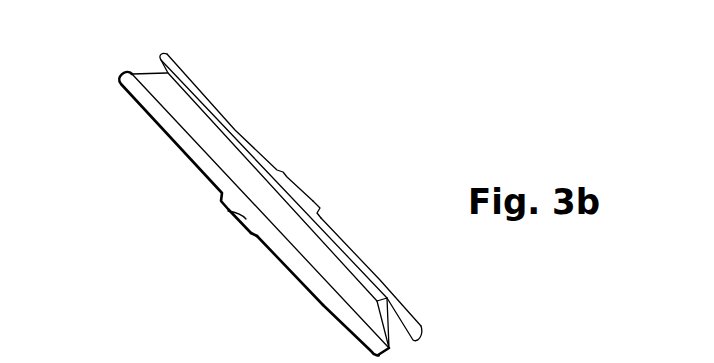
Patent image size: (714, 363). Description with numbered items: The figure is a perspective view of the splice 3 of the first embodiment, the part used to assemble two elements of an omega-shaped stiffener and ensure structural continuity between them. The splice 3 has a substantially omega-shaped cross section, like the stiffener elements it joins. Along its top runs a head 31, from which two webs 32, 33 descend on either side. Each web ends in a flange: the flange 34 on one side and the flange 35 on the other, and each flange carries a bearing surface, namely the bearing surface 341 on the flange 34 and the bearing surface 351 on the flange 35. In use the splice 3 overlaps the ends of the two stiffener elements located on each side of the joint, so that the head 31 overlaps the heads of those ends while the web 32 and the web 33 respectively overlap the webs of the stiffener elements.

The splice 3 is at (143, 162).
The head 31 is at (228, 135).
The web 32 is at (375, 318).
The web 33 is at (403, 306).
The flange 34 is at (228, 212).
The bearing surface 341 is at (292, 270).
The flange 35 is at (298, 188).
The bearing surface 351 is at (354, 244).